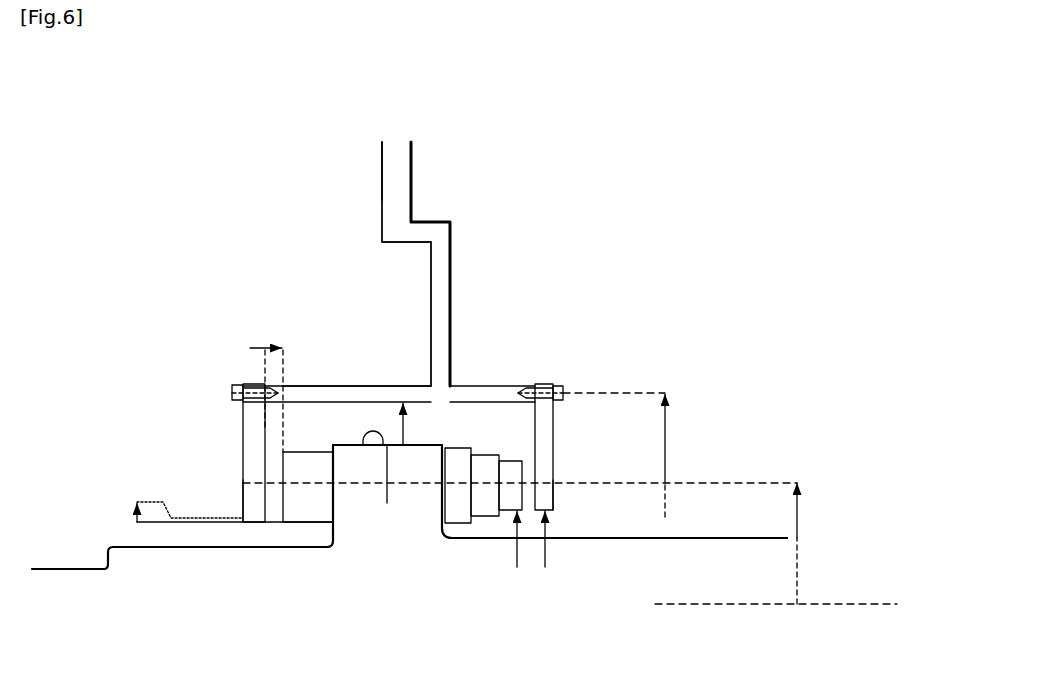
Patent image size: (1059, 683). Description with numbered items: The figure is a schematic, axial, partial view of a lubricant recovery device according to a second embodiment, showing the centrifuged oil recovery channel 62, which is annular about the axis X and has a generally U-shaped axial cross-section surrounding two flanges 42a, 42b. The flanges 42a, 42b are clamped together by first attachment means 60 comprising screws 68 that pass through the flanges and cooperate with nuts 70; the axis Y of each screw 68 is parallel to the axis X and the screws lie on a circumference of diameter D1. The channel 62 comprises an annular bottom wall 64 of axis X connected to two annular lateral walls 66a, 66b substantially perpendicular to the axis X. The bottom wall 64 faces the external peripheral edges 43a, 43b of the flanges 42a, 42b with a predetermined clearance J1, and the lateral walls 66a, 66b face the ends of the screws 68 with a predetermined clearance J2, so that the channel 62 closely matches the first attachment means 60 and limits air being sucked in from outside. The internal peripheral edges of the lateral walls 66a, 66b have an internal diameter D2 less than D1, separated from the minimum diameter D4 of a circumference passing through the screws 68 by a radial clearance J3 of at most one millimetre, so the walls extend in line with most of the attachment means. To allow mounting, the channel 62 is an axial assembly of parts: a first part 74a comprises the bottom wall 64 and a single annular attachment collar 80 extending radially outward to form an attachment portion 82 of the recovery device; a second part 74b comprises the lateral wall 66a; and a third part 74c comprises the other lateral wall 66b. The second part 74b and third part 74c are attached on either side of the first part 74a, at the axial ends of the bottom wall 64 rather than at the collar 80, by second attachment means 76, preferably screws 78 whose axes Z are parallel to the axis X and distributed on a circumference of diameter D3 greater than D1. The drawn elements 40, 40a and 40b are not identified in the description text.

The base member 40 is at (245, 549).
The first base surface 40a is at (653, 560).
The second base surface 40b is at (223, 565).
The flange 42a is at (423, 472).
The flange 42b is at (360, 470).
The external peripheral edge of flange 43a is at (410, 442).
The external peripheral edge of flange 43b is at (371, 447).
The first attachment means 60 is at (487, 502).
The centrifuged oil recovery channel 62 is at (329, 372).
The annular bottom wall 64 is at (363, 391).
The annular lateral wall 66a is at (553, 497).
The annular lateral wall 66b is at (250, 498).
The screw 68 is at (306, 462).
The nut 70 is at (481, 470).
The first part 74a is at (445, 297).
The second part 74b is at (545, 440).
The third part 74c is at (257, 442).
The second attachment means 76 is at (234, 375).
The screw 78 is at (230, 392).
The annular attachment collar 80 is at (444, 262).
The attachment portion 82 is at (395, 150).
The clearance J1 is at (386, 424).
The clearance J2 is at (266, 382).
The radial clearance J3 is at (120, 513).
The diameter D1 is at (802, 520).
The internal diameter D2 is at (545, 567).
The diameter D3 is at (672, 440).
The minimum diameter D4 is at (517, 567).
The axis X is at (833, 604).
The axis Y is at (728, 482).
The axis Z is at (608, 391).